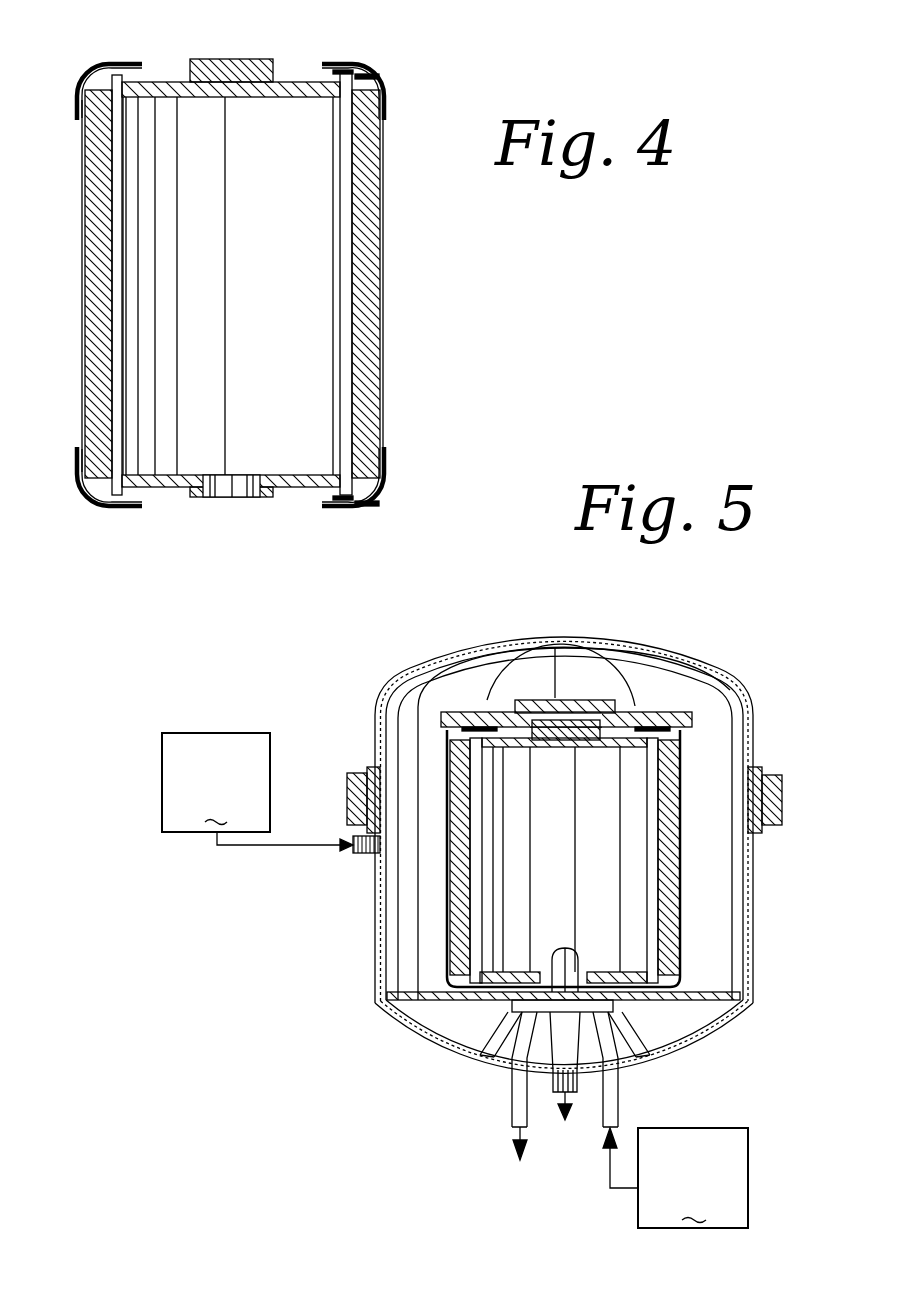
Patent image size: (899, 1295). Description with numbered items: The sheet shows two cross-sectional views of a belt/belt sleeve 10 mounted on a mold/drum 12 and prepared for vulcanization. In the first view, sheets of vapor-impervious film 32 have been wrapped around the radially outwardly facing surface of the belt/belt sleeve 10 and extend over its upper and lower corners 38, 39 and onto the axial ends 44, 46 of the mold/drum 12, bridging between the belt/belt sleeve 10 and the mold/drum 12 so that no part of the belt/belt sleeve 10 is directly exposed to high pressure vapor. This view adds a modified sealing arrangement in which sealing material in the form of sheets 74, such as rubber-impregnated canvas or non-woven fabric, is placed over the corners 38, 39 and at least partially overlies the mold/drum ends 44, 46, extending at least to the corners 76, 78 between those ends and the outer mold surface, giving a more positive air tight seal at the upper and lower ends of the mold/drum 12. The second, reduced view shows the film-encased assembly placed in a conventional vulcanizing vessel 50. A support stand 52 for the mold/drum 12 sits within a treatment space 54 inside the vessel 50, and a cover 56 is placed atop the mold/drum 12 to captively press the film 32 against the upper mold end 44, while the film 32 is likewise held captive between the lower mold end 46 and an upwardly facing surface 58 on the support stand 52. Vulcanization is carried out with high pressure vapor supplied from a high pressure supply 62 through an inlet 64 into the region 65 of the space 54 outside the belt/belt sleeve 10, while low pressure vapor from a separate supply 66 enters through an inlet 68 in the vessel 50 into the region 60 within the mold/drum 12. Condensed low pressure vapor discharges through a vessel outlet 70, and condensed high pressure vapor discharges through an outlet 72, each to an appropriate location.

In FIG. 4, the belt/belt sleeve 10 is at (366, 213).
In FIG. 4, the mold/drum 12 is at (346, 228).
In FIG. 5, the mold/drum 12 is at (577, 727).
In FIG. 5, the vapor-impervious film 32 is at (452, 738).
In FIG. 4, the corner 38 is at (385, 85).
In FIG. 4, the corner 39 is at (385, 487).
In FIG. 4, the axial end of mold/drum 44 is at (340, 72).
In FIG. 5, the axial end of mold/drum 44 is at (485, 727).
In FIG. 4, the axial end of mold/drum 46 is at (331, 503).
In FIG. 5, the axial end of mold/drum 46 is at (470, 990).
In FIG. 5, the vulcanizing vessel 50 is at (744, 684).
In FIG. 5, the support stand 52 is at (440, 1000).
In FIG. 5, the treatment space 54 is at (718, 918).
In FIG. 5, the cover 56 is at (600, 713).
In FIG. 5, the upwardly facing surface 58 is at (406, 1000).
In FIG. 5, the region within mold/drum 60 is at (635, 849).
In FIG. 5, the high pressure supply 62 is at (257, 792).
In FIG. 5, the inlet 64 is at (355, 852).
In FIG. 5, the region of space outside belt/belt sleeve 65 is at (397, 747).
In FIG. 5, the low pressure supply 66 is at (693, 1178).
In FIG. 5, the inlet 68 is at (618, 1110).
In FIG. 5, the vessel outlet 70 is at (510, 1140).
In FIG. 5, the outlet 72 is at (561, 1095).
In FIG. 4, the sealing material sheets 74 is at (95, 68).
In FIG. 4, the corner 76 is at (356, 73).
In FIG. 4, the corner 78 is at (351, 507).